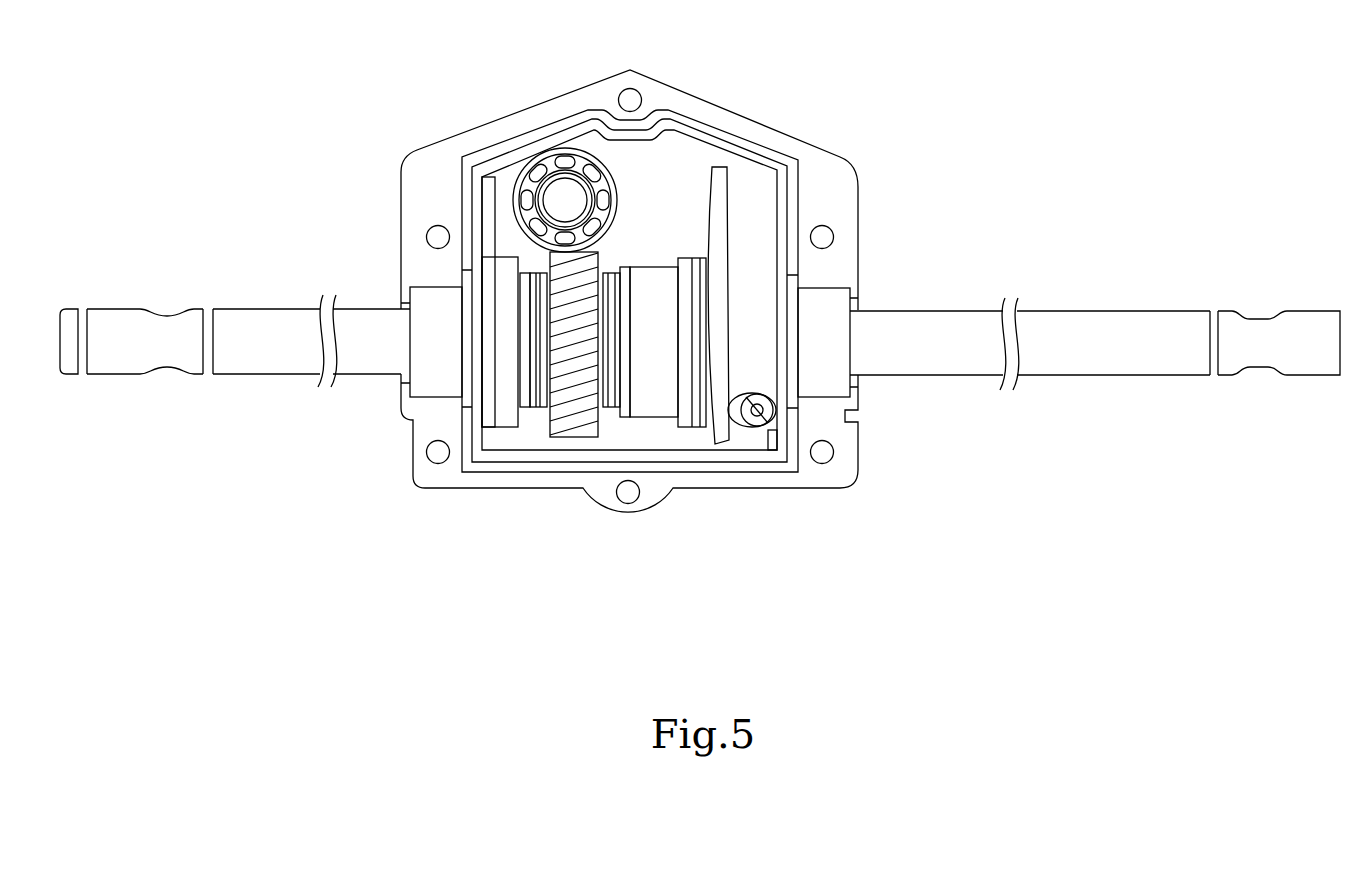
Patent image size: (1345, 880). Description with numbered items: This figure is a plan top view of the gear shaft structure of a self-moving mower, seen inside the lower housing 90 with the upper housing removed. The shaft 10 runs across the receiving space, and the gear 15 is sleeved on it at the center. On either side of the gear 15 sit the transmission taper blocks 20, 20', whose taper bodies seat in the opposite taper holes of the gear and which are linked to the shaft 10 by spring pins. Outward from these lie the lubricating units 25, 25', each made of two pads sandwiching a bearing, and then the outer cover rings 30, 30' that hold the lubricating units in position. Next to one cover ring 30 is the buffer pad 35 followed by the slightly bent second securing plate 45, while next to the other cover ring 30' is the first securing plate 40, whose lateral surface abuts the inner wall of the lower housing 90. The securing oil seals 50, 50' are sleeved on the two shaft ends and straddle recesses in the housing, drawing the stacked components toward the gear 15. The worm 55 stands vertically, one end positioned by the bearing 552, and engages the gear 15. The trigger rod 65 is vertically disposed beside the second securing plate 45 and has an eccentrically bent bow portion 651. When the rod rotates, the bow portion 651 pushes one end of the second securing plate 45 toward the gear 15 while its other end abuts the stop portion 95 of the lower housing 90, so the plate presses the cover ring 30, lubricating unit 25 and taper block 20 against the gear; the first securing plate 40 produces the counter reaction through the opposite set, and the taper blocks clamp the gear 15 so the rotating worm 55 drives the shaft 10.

The shaft 10 is at (1108, 310).
The gear 15 is at (567, 436).
The transmission taper block 20 is at (601, 419).
The transmission taper block 20' is at (519, 409).
The lubricating unit 25 is at (648, 418).
The lubricating unit 25' is at (480, 407).
The outer cover ring 30 is at (682, 418).
The outer cover ring 30' is at (445, 394).
The buffer pad 35 is at (727, 421).
The first securing plate 40 is at (488, 176).
The second securing plate 45 is at (725, 165).
The securing oil seal 50 is at (863, 290).
The securing oil seal 50' is at (409, 303).
The worm 55 is at (565, 193).
The bearing 552 is at (612, 168).
The trigger rod 65 is at (776, 405).
The bow portion 651 is at (745, 423).
The lower housing 90 is at (823, 150).
The stop portion 95 is at (727, 178).